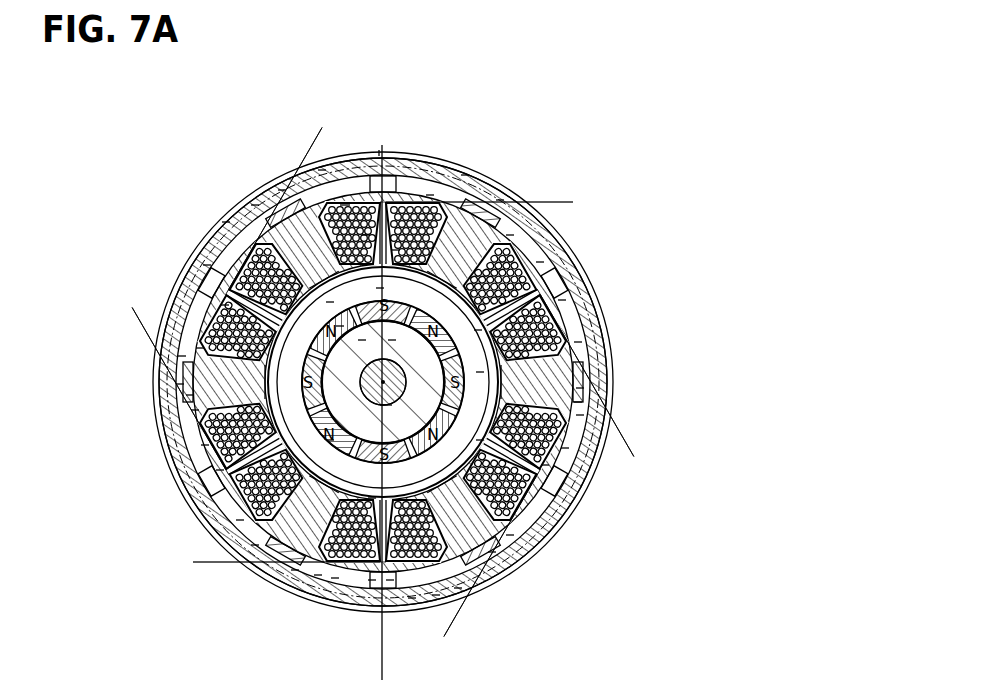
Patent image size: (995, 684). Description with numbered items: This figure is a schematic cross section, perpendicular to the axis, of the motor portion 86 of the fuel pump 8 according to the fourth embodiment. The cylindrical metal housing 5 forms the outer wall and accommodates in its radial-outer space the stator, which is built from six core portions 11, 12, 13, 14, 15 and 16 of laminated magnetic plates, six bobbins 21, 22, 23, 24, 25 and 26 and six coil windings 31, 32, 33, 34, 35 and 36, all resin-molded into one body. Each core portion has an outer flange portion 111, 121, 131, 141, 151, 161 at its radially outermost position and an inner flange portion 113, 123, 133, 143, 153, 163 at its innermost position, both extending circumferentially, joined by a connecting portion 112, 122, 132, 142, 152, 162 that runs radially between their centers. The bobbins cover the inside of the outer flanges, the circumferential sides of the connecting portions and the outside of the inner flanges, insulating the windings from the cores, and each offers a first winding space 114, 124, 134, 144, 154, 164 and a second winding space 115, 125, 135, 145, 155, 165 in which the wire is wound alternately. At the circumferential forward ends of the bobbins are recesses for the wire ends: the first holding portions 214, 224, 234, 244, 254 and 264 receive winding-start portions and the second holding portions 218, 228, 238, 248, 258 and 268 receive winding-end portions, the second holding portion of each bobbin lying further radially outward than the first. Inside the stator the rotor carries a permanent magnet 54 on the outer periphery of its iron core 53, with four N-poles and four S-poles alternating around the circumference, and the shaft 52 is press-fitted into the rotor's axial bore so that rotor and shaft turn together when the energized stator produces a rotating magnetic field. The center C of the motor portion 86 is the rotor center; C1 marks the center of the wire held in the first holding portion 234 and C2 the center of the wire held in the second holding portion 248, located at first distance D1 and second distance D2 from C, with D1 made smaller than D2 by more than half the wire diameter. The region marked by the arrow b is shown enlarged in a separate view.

The fuel pump 8 is at (530, 122).
The motor portion 86 is at (144, 260).
The housing 5 is at (396, 250).
The core portion 11 is at (270, 555).
The core portion 12 is at (200, 372).
The core portion 13 is at (302, 178).
The core portion 14 is at (470, 215).
The core portion 15 is at (597, 370).
The core portion 16 is at (478, 570).
The bobbin 21 is at (232, 490).
The bobbin 22 is at (215, 328).
The bobbin 23 is at (348, 195).
The bobbin 24 is at (445, 230).
The bobbin 25 is at (555, 320).
The bobbin 26 is at (525, 498).
The coil winding 31 is at (360, 590).
The coil winding 32 is at (182, 425).
The coil winding 33 is at (215, 242).
The coil winding 34 is at (548, 243).
The coil winding 35 is at (584, 440).
The coil winding 36 is at (390, 580).
The shaft 52 is at (386, 405).
The iron core 53 is at (182, 356).
The permanent magnet 54 is at (480, 372).
The outer flange portion 111 is at (255, 545).
The connecting portion 112 is at (295, 570).
The inner flange portion 113 is at (318, 575).
The first winding space 114 is at (240, 520).
The second winding space 115 is at (335, 578).
The outer flange portion 121 is at (205, 445).
The connecting portion 122 is at (180, 384).
The inner flange portion 123 is at (195, 410).
The first winding space 124 is at (200, 348).
The second winding space 125 is at (190, 395).
The outer flange portion 131 is at (207, 265).
The connecting portion 132 is at (282, 190).
The inner flange portion 133 is at (226, 222).
The first winding space 134 is at (322, 170).
The second winding space 135 is at (255, 205).
The outer flange portion 141 is at (540, 262).
The connecting portion 142 is at (500, 200).
The inner flange portion 143 is at (465, 175).
The first winding space 144 is at (510, 235).
The second winding space 145 is at (430, 195).
The outer flange portion 151 is at (565, 448).
The connecting portion 152 is at (580, 388).
The inner flange portion 153 is at (580, 415).
The first winding space 154 is at (578, 402).
The second winding space 155 is at (578, 342).
The outer flange portion 161 is at (492, 552).
The connecting portion 162 is at (458, 588).
The inner flange portion 163 is at (436, 595).
The first winding space 164 is at (412, 598).
The second winding space 165 is at (510, 535).
The first holding portion 214 is at (220, 470).
The second holding portion 218 is at (372, 498).
The first holding portion 224 is at (225, 305).
The second holding portion 228 is at (330, 440).
The first holding portion 234 is at (366, 235).
The second holding portion 238 is at (330, 302).
The coil side 244 is at (562, 300).
The second holding portion 248 is at (380, 288).
The first holding portion 254 is at (545, 465).
The second holding portion 258 is at (478, 330).
The first holding portion 264 is at (372, 580).
The second holding portion 268 is at (480, 440).
The center of the motor portion C is at (370, 383).
The center of the winding-start portion C1 is at (345, 205).
The center of the winding-end portion C2 is at (382, 150).
The first distance D1 is at (362, 340).
The second distance D2 is at (392, 340).
The portion b is at (340, 328).